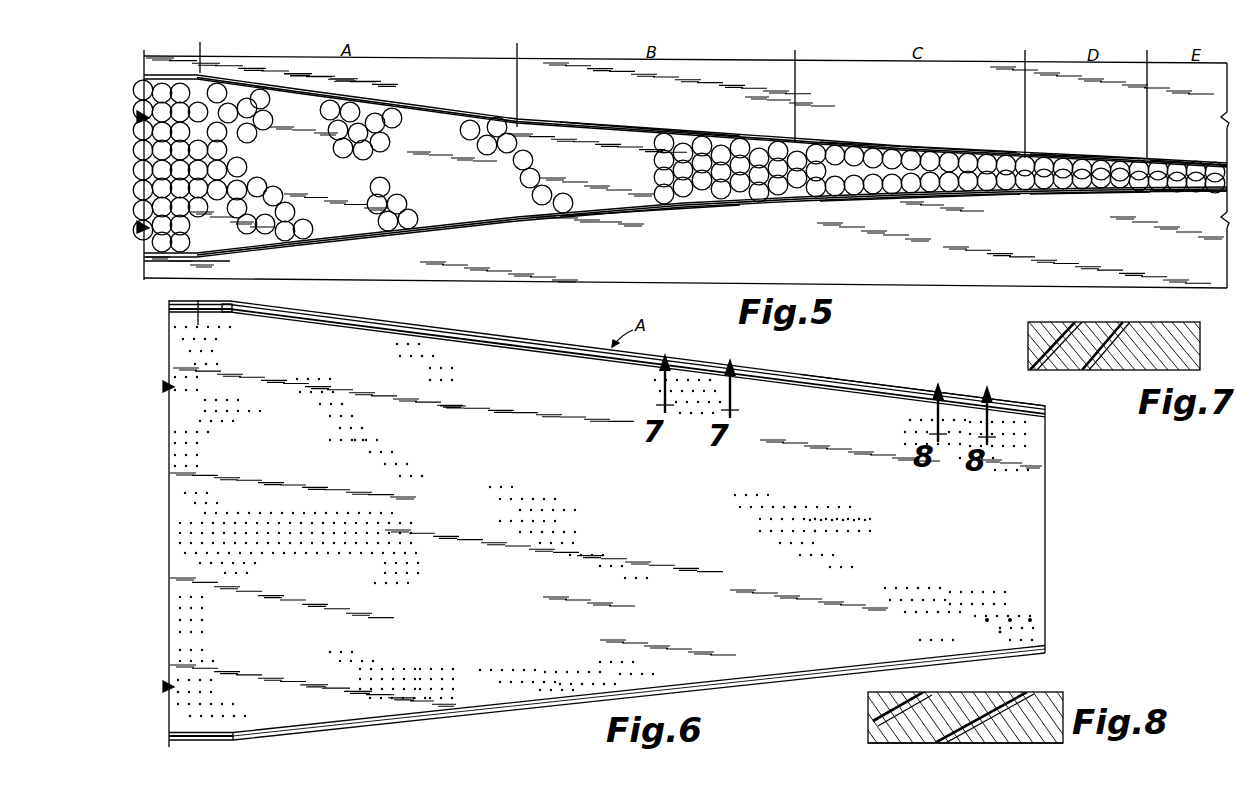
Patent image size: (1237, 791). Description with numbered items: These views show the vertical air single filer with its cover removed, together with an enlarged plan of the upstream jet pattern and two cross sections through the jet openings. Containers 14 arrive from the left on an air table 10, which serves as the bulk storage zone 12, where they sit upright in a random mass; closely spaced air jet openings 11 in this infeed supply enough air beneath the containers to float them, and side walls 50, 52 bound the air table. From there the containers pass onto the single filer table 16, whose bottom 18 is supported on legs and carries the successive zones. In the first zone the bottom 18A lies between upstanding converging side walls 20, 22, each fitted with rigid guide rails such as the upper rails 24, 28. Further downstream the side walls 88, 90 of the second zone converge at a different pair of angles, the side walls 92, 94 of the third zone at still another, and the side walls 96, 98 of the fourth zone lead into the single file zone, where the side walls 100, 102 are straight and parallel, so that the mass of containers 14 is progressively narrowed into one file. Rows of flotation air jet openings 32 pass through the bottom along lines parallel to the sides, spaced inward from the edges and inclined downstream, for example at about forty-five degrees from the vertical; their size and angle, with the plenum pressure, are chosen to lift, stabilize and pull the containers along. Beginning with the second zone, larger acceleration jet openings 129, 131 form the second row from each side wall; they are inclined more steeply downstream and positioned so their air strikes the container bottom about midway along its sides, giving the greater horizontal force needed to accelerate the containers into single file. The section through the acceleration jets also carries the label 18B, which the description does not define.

In FIG. 5, the air table 10 is at (185, 260).
In FIG. 6, the air table 10 is at (188, 306).
In FIG. 6, the air jet openings 11 is at (182, 358).
In FIG. 5, the bulk storage zone 12 is at (172, 78).
In FIG. 6, the bulk storage zone 12 is at (199, 318).
In FIG. 5, the containers 14 is at (238, 167).
In FIG. 5, the single filer table 16 is at (719, 259).
In FIG. 5, the bottom 18 is at (325, 187).
In FIG. 6, the bottom 18 is at (621, 495).
In FIG. 8, the bottom 18 is at (1010, 692).
In FIG. 6, the bottom of zone A 18A is at (873, 397).
In FIG. 7, the bottom of zone A 18A is at (1147, 330).
In FIG. 8, the lower plate surface 18B is at (1058, 740).
In FIG. 5, the side wall 20 is at (392, 100).
In FIG. 6, the side wall 20 is at (470, 330).
In FIG. 5, the side wall 22 is at (385, 238).
In FIG. 6, the side wall 22 is at (505, 706).
In FIG. 5, the upper rigid guide rail 24 is at (420, 117).
In FIG. 6, the upper rigid guide rail 24 is at (540, 347).
In FIG. 5, the upper rigid guide rail 28 is at (466, 219).
In FIG. 6, the upper rigid guide rail 28 is at (400, 710).
In FIG. 6, the flotation air jet openings 32 is at (380, 440).
In FIG. 7, the flotation air jet openings 32 is at (1070, 335).
In FIG. 6, the side wall 50 is at (226, 308).
In FIG. 6, the side wall 52 is at (190, 730).
In FIG. 5, the side wall 88 is at (683, 131).
In FIG. 5, the side wall 90 is at (640, 222).
In FIG. 5, the side wall 92 is at (944, 148).
In FIG. 5, the side wall 94 is at (930, 202).
In FIG. 5, the side wall 96 is at (1086, 157).
In FIG. 5, the side wall 98 is at (1076, 196).
In FIG. 5, the side wall 100 is at (1183, 162).
In FIG. 5, the side wall 102 is at (1182, 196).
In FIG. 6, the acceleration jet opening 129 is at (965, 626).
In FIG. 6, the acceleration jet opening 131 is at (1015, 438).
In FIG. 8, the acceleration jet opening 131 is at (880, 722).